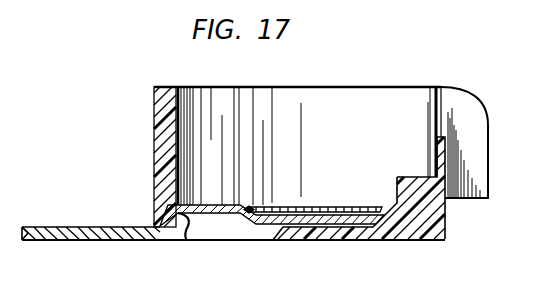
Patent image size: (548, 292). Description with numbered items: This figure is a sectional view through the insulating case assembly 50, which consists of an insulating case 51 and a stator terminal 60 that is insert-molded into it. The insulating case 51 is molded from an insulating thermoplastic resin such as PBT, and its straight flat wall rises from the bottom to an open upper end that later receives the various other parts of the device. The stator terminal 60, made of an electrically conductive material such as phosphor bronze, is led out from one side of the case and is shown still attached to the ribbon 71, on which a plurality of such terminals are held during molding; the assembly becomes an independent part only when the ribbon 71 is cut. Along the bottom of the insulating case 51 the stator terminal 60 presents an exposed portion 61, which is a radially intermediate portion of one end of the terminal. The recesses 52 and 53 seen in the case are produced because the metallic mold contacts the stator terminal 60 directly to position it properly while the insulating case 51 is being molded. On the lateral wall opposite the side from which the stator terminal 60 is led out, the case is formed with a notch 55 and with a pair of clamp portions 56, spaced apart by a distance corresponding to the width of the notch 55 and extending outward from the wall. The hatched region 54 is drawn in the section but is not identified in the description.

The insulating case assembly 50 is at (388, 63).
The insulating case 51 is at (152, 130).
The recess 52 is at (310, 207).
The recess 53 is at (233, 231).
The base 54 is at (393, 184).
The notch 55 is at (441, 135).
The clamp portion 56 is at (478, 115).
The stator terminal 60 is at (83, 227).
The exposed portion 61 is at (212, 204).
The ribbon 71 is at (40, 242).